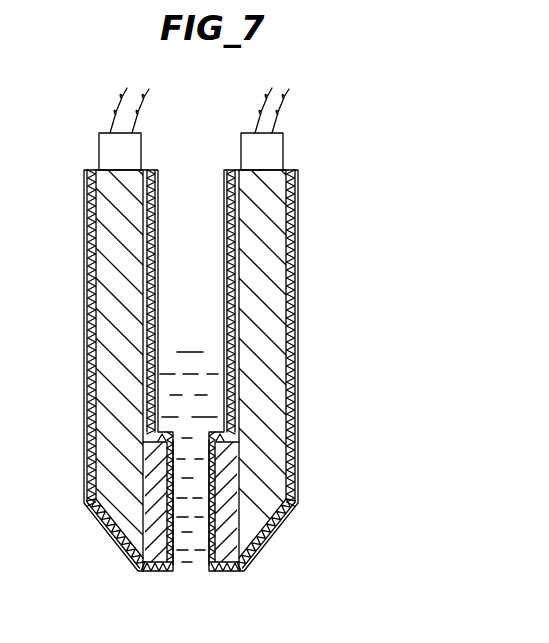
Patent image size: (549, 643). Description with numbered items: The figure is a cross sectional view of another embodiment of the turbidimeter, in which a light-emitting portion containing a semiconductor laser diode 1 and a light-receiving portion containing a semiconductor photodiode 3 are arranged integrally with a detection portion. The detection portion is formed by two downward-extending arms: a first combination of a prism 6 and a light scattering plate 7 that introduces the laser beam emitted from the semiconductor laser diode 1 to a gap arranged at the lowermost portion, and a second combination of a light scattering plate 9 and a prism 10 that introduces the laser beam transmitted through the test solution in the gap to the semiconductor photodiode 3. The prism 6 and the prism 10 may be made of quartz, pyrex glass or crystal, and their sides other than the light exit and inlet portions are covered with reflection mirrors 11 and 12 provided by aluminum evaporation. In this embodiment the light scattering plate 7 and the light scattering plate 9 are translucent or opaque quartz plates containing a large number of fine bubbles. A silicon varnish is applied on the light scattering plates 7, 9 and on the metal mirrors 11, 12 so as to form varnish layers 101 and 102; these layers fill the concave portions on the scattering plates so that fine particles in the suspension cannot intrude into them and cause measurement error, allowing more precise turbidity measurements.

The semiconductor laser diode 1 is at (102, 158).
The semiconductor photodiode 3 is at (278, 150).
The prism 6 is at (108, 343).
The reflection mirror 11 is at (97, 434).
The prism 10 is at (273, 270).
The reflection mirror 12 is at (289, 344).
The light scattering plate 7 is at (157, 533).
The light scattering plate 9 is at (230, 478).
The varnish layer 101 is at (176, 523).
The varnish layer 102 is at (191, 528).